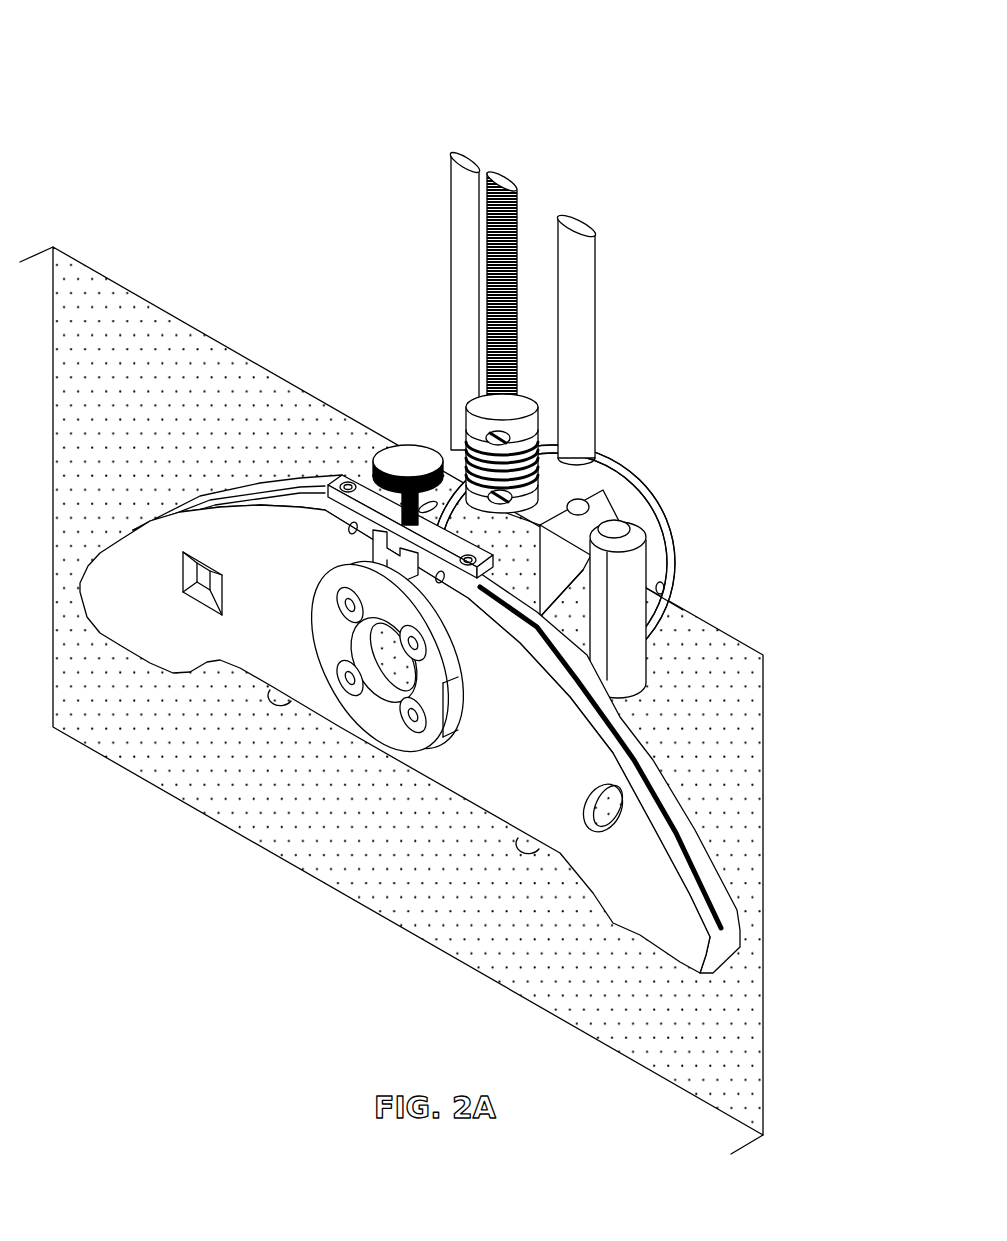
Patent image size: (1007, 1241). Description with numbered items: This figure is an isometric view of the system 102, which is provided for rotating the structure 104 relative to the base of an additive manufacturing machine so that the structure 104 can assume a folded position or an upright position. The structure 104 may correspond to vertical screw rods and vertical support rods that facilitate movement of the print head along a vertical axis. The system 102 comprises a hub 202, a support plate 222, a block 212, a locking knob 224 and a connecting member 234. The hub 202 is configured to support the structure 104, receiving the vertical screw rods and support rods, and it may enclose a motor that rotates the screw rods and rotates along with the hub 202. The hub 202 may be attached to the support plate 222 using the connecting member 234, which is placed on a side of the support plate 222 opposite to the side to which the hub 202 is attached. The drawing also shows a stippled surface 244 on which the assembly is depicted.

The system 102 is at (453, 496).
The structure 104 is at (523, 317).
The hub 202 is at (569, 565).
The block 212 is at (388, 441).
The support plate 222 is at (453, 724).
The locking knob 224 is at (408, 453).
The connecting member 234 is at (348, 747).
The mounting plane 244 is at (391, 700).